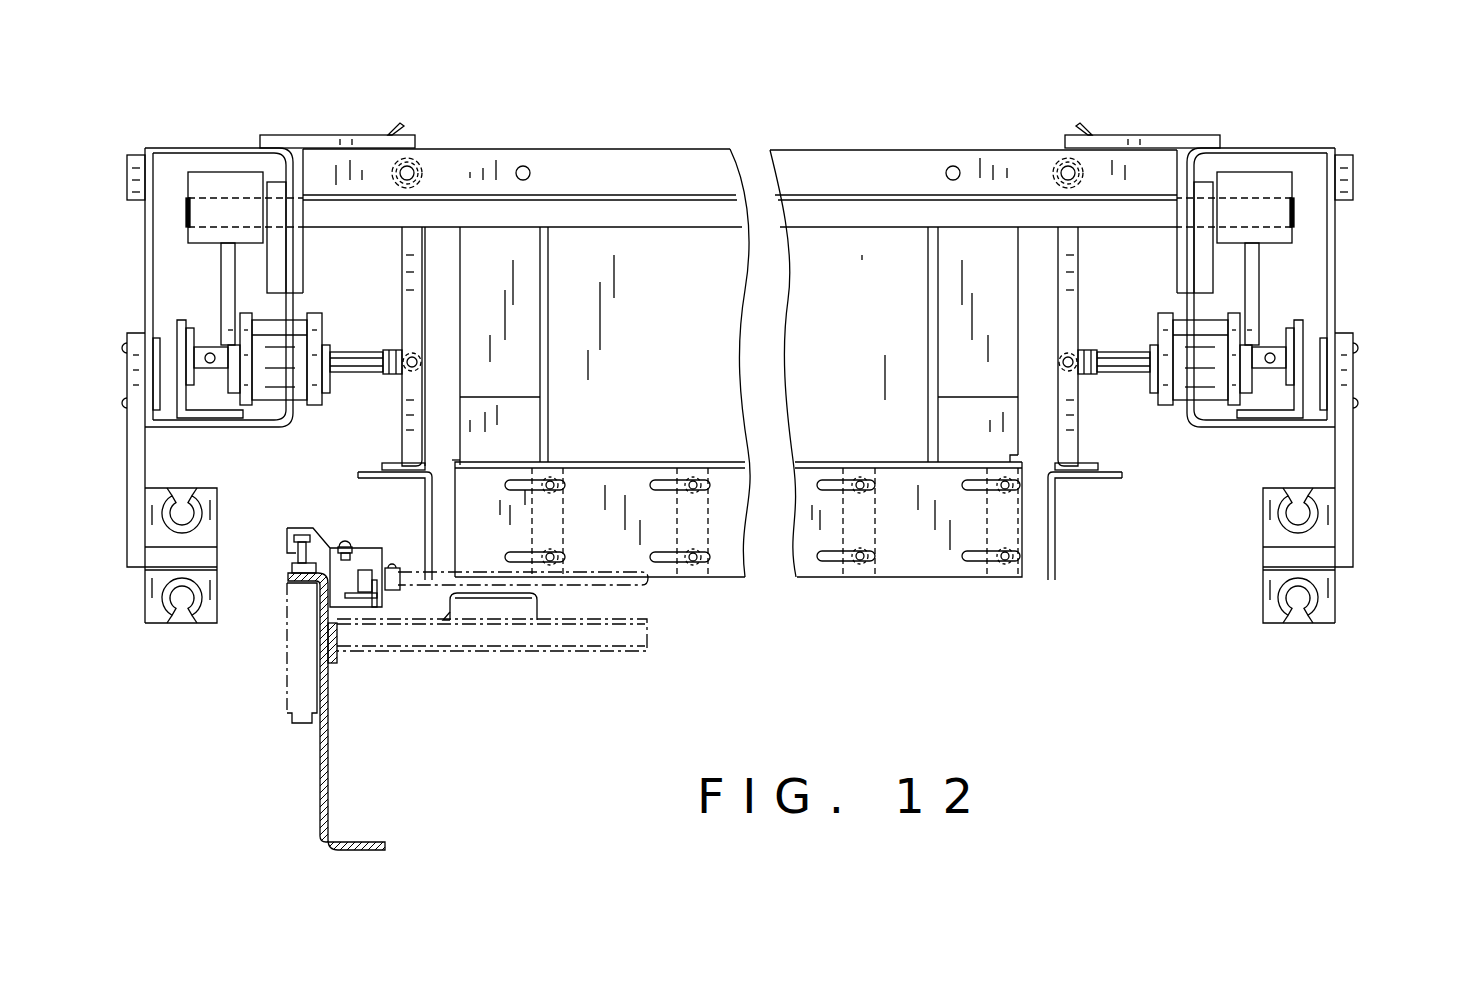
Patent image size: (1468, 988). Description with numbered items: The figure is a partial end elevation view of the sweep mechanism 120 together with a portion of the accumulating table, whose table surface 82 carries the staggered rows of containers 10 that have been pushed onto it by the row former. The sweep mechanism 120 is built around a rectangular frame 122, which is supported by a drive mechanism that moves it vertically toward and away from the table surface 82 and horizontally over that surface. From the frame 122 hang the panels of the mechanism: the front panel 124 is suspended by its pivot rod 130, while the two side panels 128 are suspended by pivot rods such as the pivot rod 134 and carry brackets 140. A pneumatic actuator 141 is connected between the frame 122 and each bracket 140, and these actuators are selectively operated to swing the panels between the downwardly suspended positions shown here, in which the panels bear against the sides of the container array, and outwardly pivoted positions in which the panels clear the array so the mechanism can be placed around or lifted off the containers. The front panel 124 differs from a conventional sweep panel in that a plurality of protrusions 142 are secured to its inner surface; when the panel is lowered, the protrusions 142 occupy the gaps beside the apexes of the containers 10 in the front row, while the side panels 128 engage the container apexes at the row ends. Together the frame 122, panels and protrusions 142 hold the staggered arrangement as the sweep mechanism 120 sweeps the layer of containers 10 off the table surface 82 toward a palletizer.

The container 10 is at (493, 608).
The table surface 82 is at (565, 620).
The sweep mechanism 120 is at (1372, 277).
The frame 122 is at (840, 172).
The front panel 124 is at (917, 558).
The side panel 128 is at (430, 505).
The pivot rod 130 is at (248, 197).
The pivot rod 134 is at (415, 166).
The bracket 140 is at (400, 297).
The pneumatic actuator 141 is at (273, 368).
The protrusion 142 is at (702, 522).